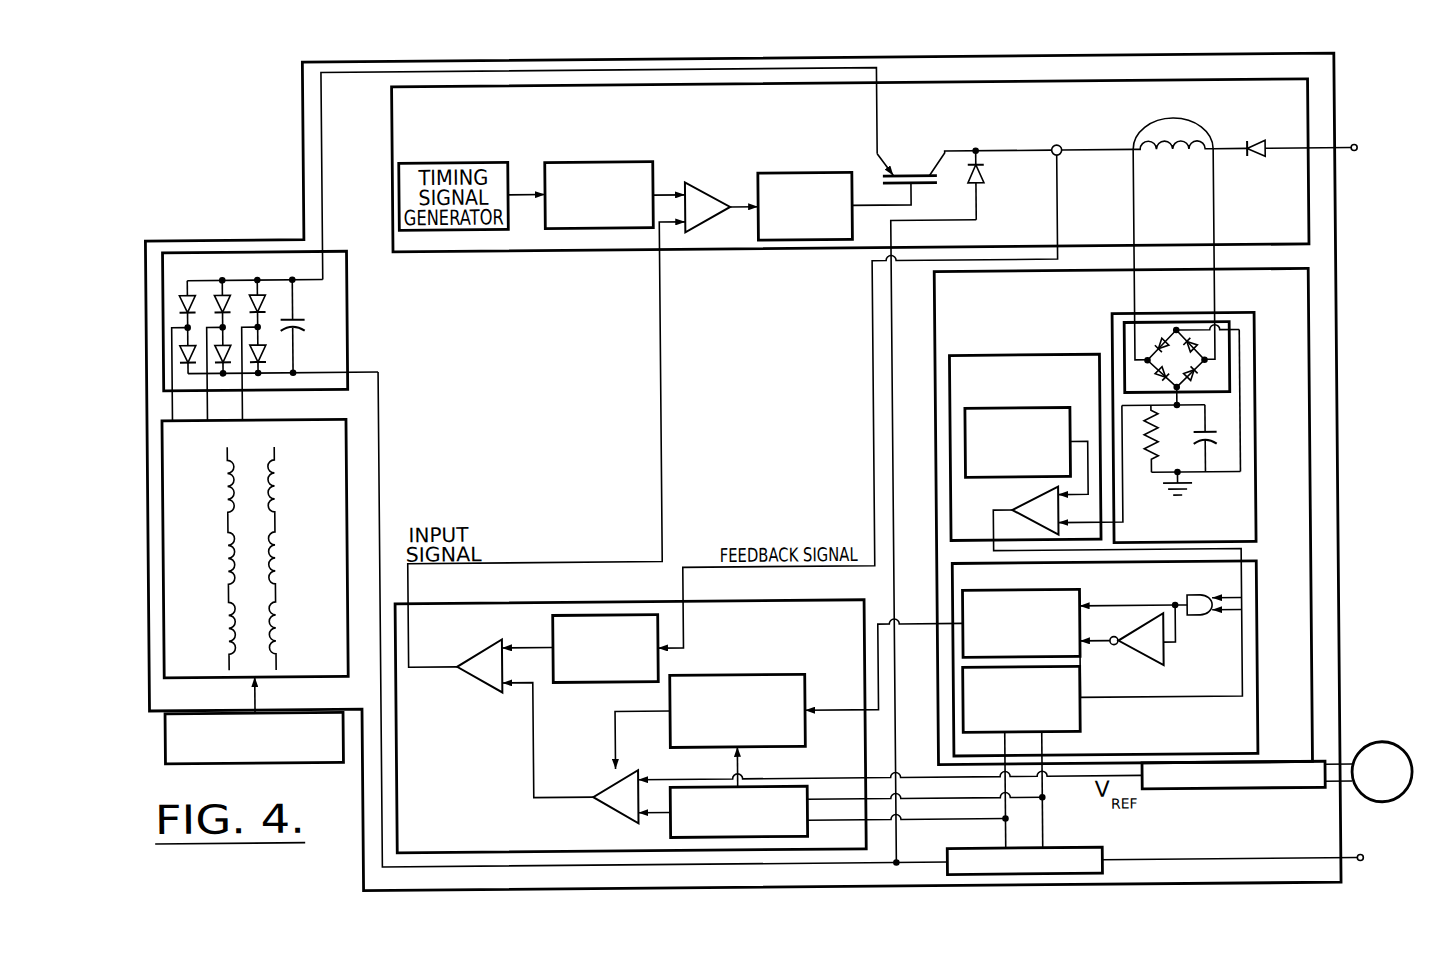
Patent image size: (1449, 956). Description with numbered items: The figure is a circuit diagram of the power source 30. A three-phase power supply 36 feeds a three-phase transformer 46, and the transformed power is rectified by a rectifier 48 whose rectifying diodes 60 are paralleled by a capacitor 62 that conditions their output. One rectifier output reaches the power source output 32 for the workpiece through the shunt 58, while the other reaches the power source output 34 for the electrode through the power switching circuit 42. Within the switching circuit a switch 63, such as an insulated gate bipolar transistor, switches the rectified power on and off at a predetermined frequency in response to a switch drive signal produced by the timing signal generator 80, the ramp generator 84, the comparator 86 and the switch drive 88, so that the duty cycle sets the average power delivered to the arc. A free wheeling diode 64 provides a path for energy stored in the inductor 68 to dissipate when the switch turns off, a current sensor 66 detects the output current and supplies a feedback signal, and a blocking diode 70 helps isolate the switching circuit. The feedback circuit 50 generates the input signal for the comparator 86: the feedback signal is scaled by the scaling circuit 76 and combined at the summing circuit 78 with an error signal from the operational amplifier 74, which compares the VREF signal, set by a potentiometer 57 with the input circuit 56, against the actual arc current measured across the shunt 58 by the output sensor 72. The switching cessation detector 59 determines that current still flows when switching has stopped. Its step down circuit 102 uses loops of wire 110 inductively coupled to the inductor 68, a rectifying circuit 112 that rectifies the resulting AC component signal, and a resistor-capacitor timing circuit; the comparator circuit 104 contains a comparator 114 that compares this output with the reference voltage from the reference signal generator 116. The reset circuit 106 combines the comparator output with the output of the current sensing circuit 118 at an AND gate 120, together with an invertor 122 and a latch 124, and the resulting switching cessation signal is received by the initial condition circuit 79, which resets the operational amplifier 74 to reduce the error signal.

The power source 30 is at (257, 234).
The power source output 32 is at (1312, 860).
The power source output 34 is at (1330, 158).
The power supply 36 is at (330, 759).
The power switching circuit 42 is at (395, 137).
The three-phase transformer 46 is at (314, 414).
The rectifier 48 is at (269, 319).
The feedback circuit 50 is at (571, 600).
The input circuit 56 is at (1258, 793).
The potentiometer 57 is at (1401, 754).
The shunt 58 is at (1075, 849).
The switching cessation detector 59 is at (1311, 275).
The rectifying diodes 60 is at (190, 341).
The capacitor 62 is at (301, 327).
The switch 63 is at (918, 188).
The free wheeling diode 64 is at (968, 154).
The current sensor 66 is at (1056, 150).
The inductor 68 is at (1153, 144).
The blocking diode 70 is at (1261, 144).
The output sensor 72 is at (782, 786).
The operational amplifier 74 is at (634, 767).
The scaling circuit 76 is at (552, 628).
The summing circuit 78 is at (476, 646).
The initial condition circuit 79 is at (761, 673).
The timing signal generator 80 is at (514, 189).
The ramp generator 84 is at (656, 171).
The comparator 86 is at (708, 185).
The switch drive 88 is at (828, 174).
The step down circuit 102 is at (1150, 316).
The comparator circuit 104 is at (988, 540).
The reset circuit 106 is at (1256, 588).
The loops of wire 110 is at (1198, 124).
The rectifying circuit 112 is at (1226, 322).
The comparator 114 is at (1028, 502).
The reference signal generator 116 is at (1046, 408).
The current sensing circuit 118 is at (1080, 718).
The AND gate 120 is at (1208, 621).
The invertor 122 is at (1164, 657).
The latch 124 is at (1078, 658).